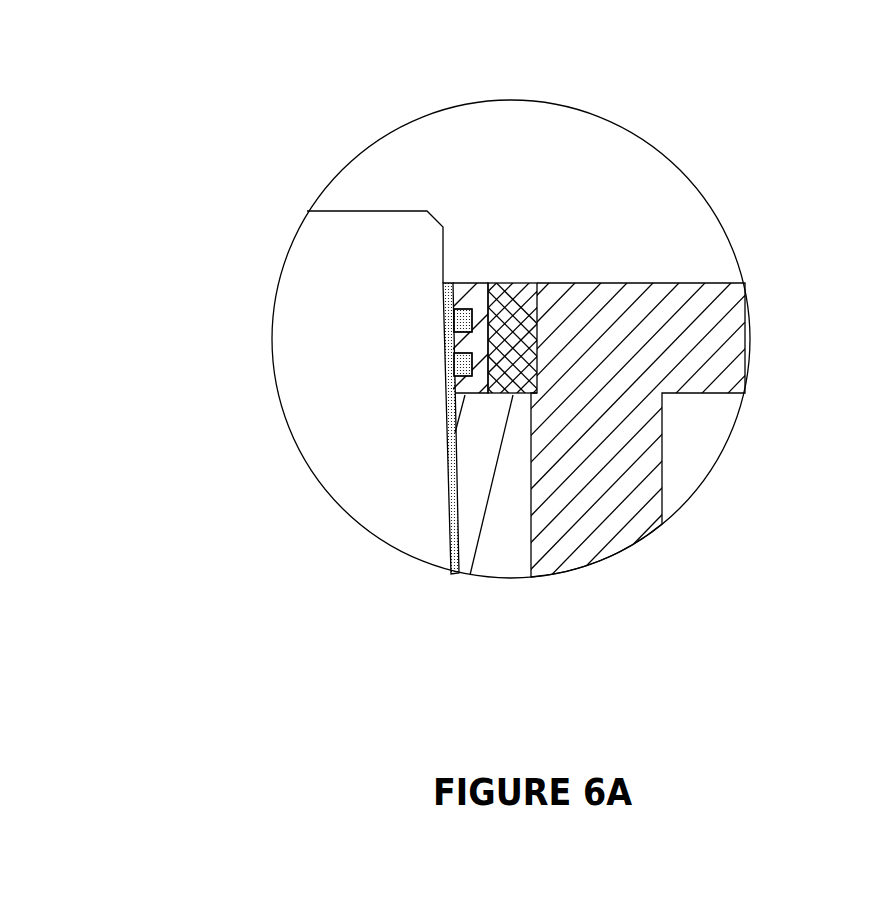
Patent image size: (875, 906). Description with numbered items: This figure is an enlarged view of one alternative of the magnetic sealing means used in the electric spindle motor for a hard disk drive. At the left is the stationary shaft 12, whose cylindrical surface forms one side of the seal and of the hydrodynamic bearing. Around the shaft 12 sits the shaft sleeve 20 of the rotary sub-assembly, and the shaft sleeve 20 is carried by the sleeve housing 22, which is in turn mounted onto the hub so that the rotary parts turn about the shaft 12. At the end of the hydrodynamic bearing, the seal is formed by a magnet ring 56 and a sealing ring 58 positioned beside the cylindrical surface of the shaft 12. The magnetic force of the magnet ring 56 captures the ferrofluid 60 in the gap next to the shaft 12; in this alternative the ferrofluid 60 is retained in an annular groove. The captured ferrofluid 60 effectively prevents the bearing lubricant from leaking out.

The shaft 12 is at (258, 470).
The shaft sleeve 20 is at (423, 600).
The sleeve housing 22 is at (735, 535).
The magnet ring 56 is at (733, 152).
The sealing ring 58 is at (605, 80).
The ferrofluid 60 is at (455, 307).